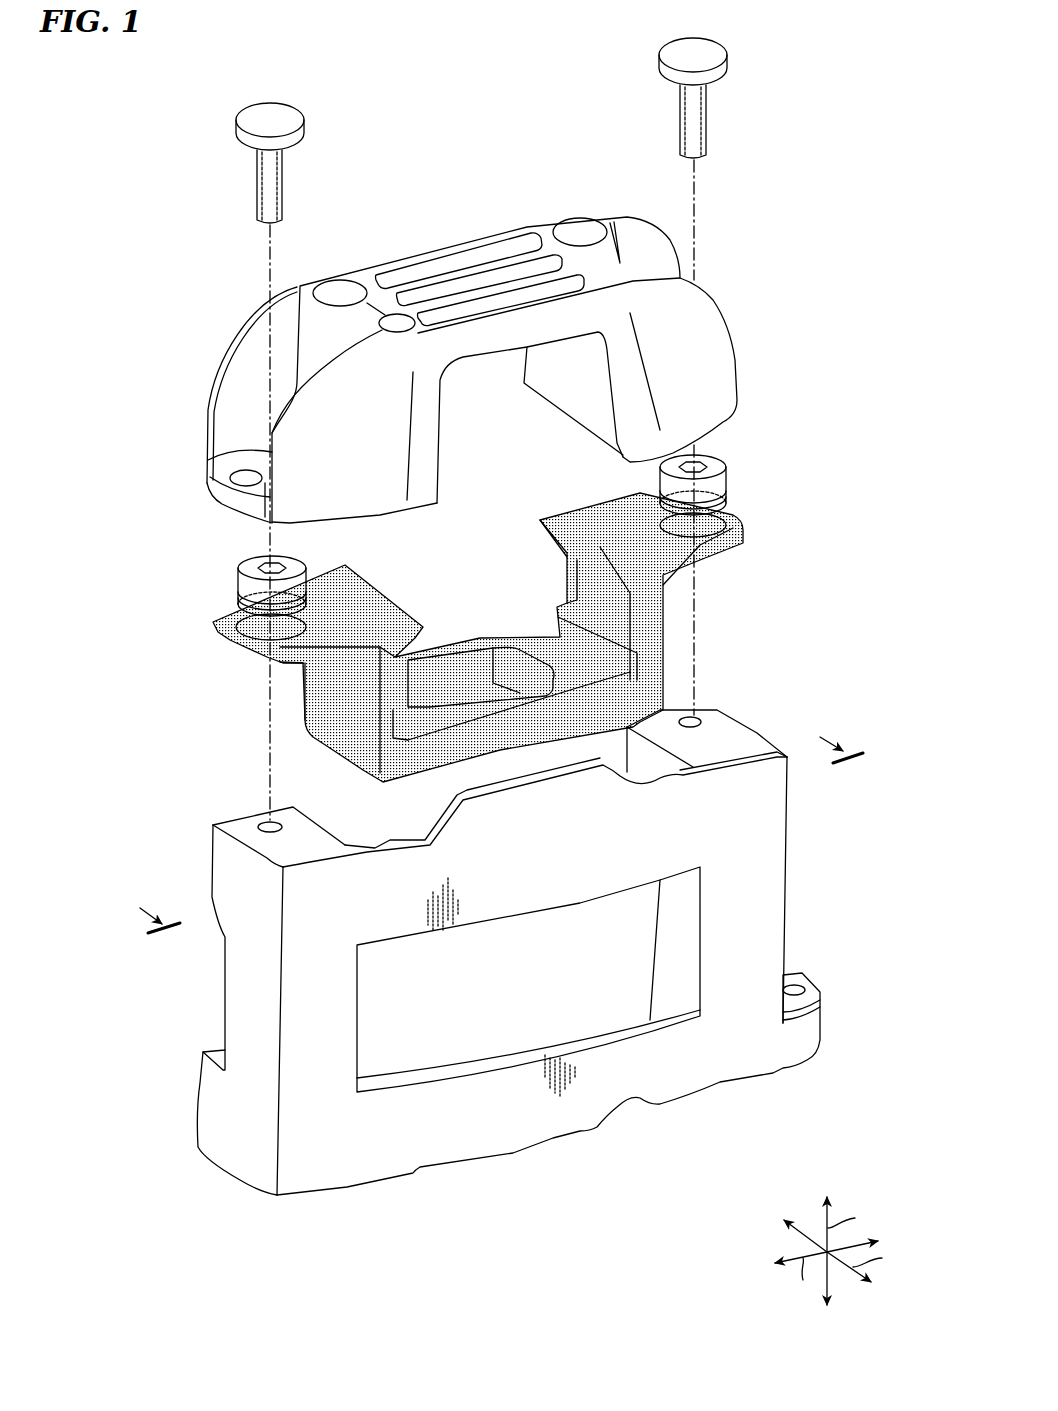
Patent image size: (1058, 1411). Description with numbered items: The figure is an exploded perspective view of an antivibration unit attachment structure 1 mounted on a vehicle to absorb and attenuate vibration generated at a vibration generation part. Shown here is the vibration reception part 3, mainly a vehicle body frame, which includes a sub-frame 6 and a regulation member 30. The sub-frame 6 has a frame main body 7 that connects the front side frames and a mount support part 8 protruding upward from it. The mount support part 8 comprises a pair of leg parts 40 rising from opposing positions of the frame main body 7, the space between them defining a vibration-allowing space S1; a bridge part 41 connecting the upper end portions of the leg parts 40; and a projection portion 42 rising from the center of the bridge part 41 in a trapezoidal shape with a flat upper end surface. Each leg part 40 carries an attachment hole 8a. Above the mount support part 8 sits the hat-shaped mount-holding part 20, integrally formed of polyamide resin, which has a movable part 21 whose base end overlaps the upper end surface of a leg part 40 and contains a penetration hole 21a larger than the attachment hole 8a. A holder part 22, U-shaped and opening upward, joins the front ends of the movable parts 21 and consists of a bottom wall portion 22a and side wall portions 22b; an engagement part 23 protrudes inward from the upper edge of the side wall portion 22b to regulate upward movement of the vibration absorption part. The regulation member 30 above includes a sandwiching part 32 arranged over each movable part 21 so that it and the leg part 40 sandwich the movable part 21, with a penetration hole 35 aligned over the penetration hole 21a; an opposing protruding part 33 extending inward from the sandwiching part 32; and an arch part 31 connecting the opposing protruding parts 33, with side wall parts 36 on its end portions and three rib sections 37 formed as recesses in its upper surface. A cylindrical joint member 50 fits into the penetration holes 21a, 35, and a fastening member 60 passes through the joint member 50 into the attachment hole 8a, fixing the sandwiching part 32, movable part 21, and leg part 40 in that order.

The antivibration unit attachment structure 1 is at (145, 140).
The vibration reception part 3 is at (687, 1110).
The sub-frame 6 is at (552, 976).
The frame main body 7 is at (313, 1197).
The mount support part 8 is at (760, 913).
The attachment hole 8a is at (695, 720).
The mount-holding part 20 is at (752, 537).
The movable part 21 is at (290, 665).
The penetration hole 21a is at (715, 520).
The holder part 22 is at (157, 728).
The bottom wall portion 22a is at (340, 712).
The side wall portion 22b is at (440, 766).
The engagement part 23 is at (548, 520).
The regulation member 30 is at (668, 233).
The arch part 31 is at (452, 243).
The sandwiching part 32 is at (297, 500).
The opposing protruding part 33 is at (430, 510).
The penetration hole 35 is at (252, 478).
The side wall part 36 is at (243, 355).
The rib section 37 is at (507, 248).
The leg part 40 is at (723, 945).
The bridge part 41 is at (505, 868).
The projection portion 42 is at (563, 793).
The joint member 50 is at (730, 460).
The fastening member 60 is at (704, 117).
The vibration-allowing space S1 is at (473, 1013).